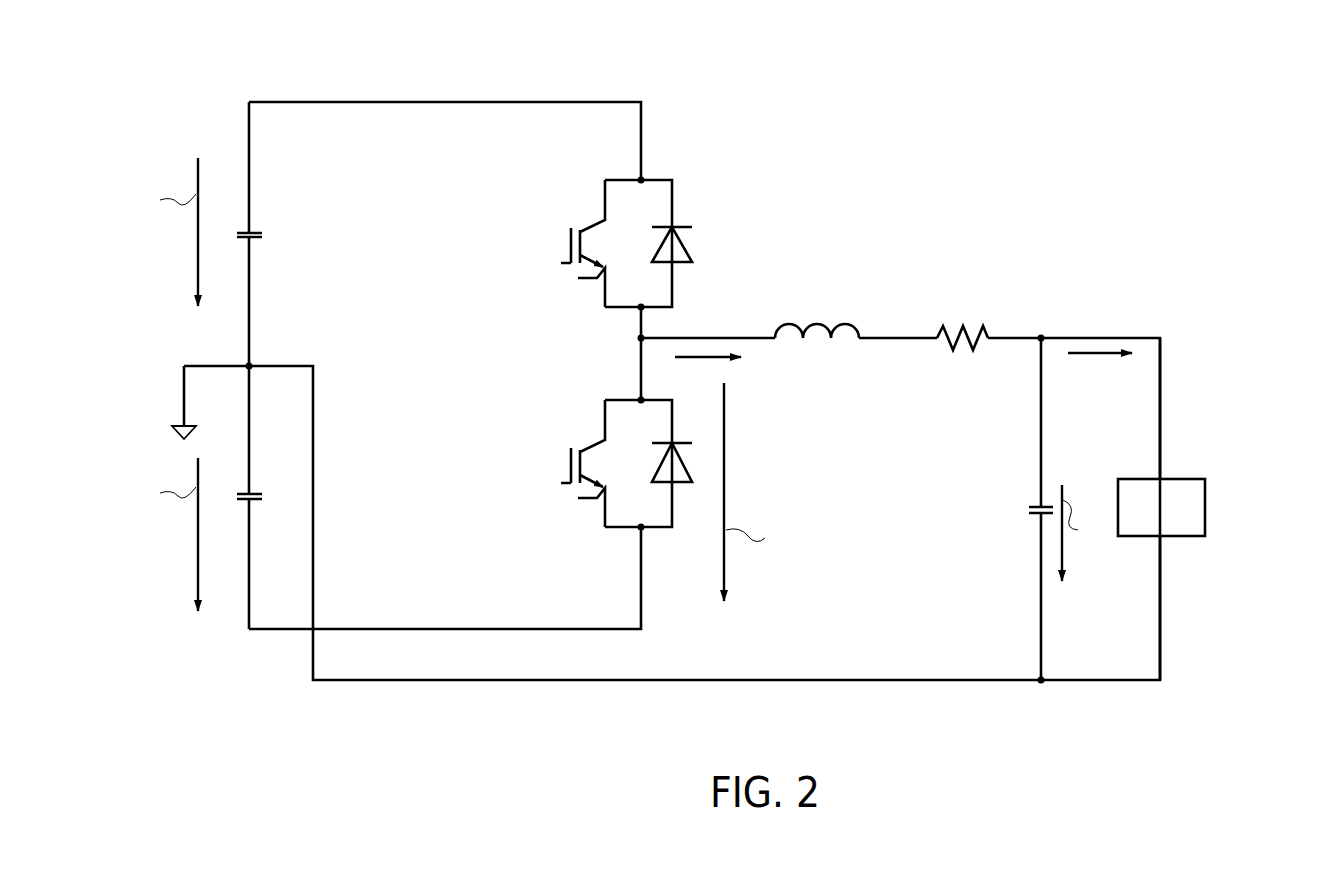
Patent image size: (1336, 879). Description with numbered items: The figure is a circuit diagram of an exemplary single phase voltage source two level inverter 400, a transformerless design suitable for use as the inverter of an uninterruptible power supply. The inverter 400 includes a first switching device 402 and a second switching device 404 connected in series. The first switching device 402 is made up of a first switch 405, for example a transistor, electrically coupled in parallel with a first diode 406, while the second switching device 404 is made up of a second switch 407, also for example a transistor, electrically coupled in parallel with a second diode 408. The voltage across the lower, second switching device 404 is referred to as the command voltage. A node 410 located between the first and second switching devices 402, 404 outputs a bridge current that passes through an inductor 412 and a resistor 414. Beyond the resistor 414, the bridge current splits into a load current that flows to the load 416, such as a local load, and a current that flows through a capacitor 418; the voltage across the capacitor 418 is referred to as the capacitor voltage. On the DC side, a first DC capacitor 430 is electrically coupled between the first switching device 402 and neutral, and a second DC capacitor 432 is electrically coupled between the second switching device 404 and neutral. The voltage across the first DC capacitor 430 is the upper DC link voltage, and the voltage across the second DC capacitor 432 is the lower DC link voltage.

The single phase voltage source two level inverter 400 is at (1182, 95).
The first switching device 402 is at (688, 153).
The second switching device 404 is at (611, 377).
The first switch 405 is at (594, 221).
The first diode 406 is at (684, 243).
The second switch 407 is at (594, 441).
The second diode 408 is at (690, 460).
The node 410 is at (641, 338).
The inductor 412 is at (820, 322).
The resistor 414 is at (955, 325).
The load 416 is at (1205, 507).
The capacitor 418 is at (1035, 505).
The first DC capacitor 430 is at (250, 232).
The second DC capacitor 432 is at (250, 493).